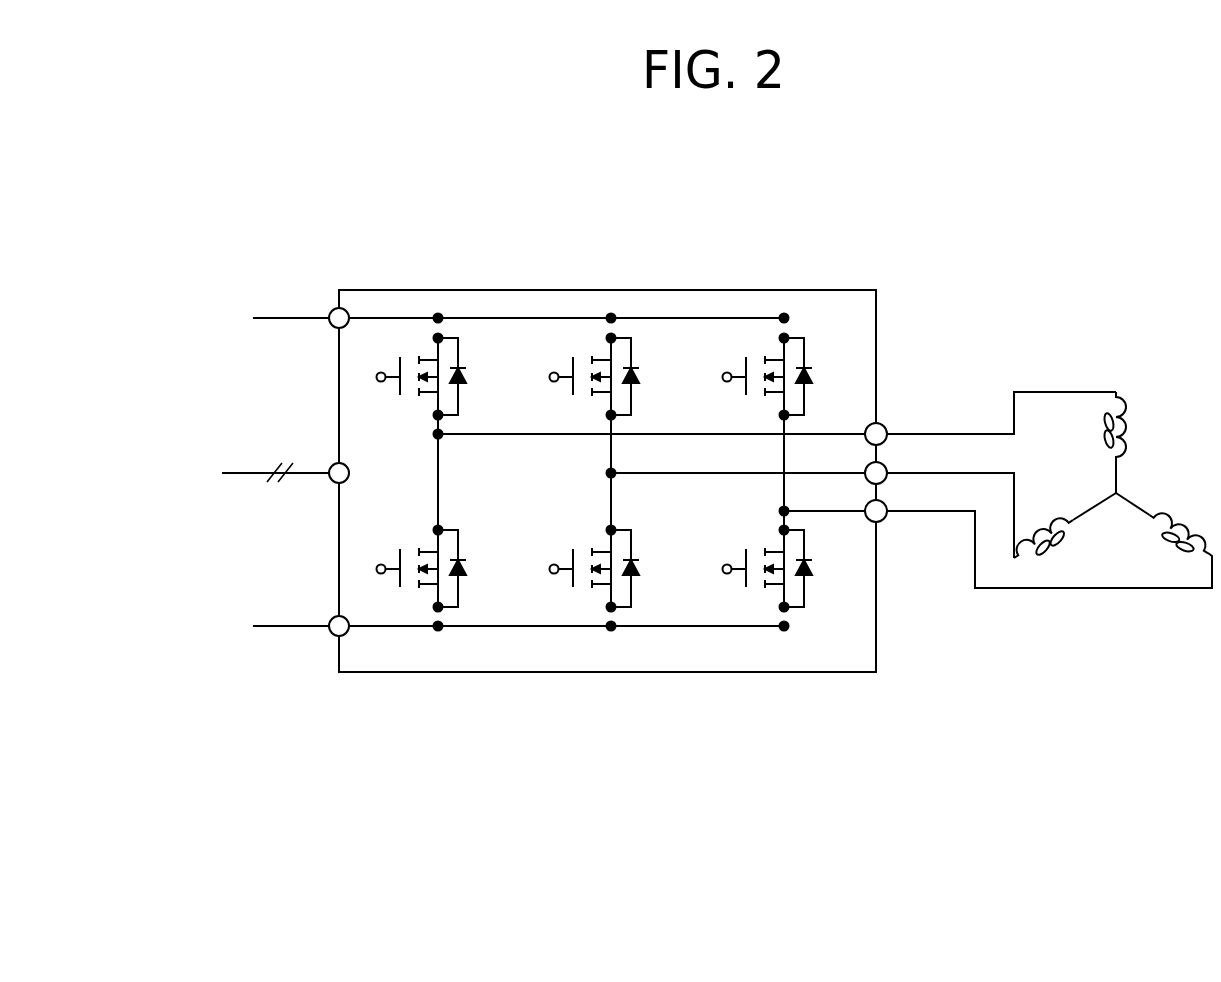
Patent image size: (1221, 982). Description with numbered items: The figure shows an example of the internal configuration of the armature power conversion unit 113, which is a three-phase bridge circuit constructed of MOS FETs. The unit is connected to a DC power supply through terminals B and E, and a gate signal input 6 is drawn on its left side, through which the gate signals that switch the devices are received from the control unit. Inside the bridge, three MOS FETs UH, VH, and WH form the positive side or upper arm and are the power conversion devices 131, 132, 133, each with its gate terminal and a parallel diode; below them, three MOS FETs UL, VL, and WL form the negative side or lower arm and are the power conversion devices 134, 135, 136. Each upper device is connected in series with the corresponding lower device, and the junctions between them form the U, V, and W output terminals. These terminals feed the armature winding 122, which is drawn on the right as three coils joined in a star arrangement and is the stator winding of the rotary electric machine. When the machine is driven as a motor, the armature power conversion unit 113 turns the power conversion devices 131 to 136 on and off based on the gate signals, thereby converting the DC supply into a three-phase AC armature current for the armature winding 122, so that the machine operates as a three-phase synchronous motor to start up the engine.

The gate signal line 6 is at (275, 460).
The armature power conversion unit 113 is at (878, 296).
The armature winding 122 is at (1052, 380).
The power conversion device 131 is at (406, 345).
The power conversion device 132 is at (581, 340).
The power conversion device 133 is at (754, 338).
The power conversion device 134 is at (411, 610).
The power conversion device 135 is at (587, 605).
The power conversion device 136 is at (766, 613).